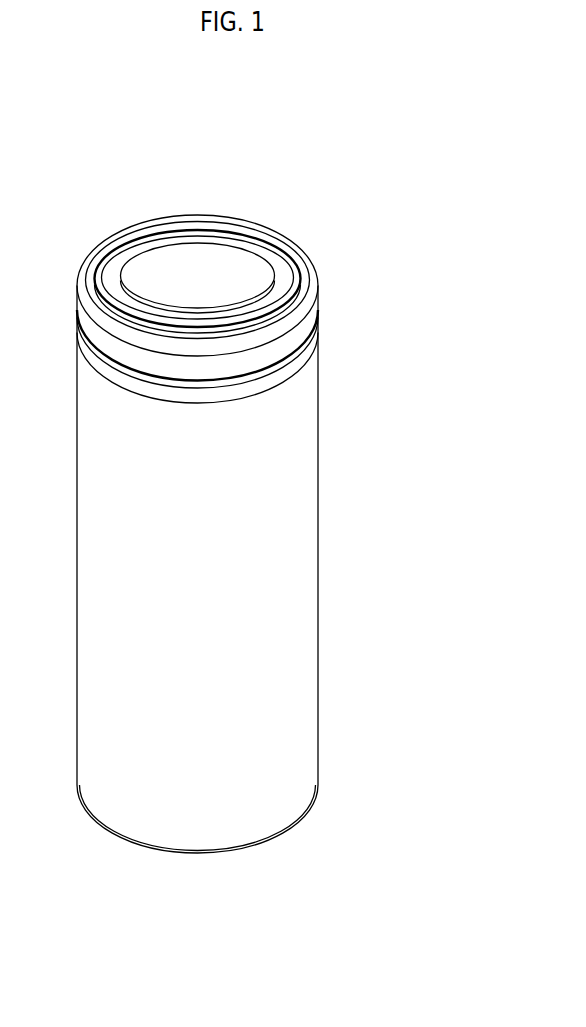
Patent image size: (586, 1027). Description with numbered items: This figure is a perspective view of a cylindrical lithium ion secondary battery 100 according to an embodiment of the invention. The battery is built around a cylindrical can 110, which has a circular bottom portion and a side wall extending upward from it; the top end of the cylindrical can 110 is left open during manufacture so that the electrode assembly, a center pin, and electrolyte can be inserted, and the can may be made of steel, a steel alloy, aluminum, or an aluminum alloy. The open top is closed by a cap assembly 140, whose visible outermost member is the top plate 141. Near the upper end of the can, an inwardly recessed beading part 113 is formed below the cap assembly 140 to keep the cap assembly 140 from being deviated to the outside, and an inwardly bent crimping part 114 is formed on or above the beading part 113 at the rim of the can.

The cylindrical lithium ion secondary battery 100 is at (72, 143).
The cylindrical can 110 is at (322, 562).
The beading part 113 is at (308, 352).
The crimping part 114 is at (302, 266).
The cap assembly 140 is at (197, 254).
The top plate 141 is at (227, 291).